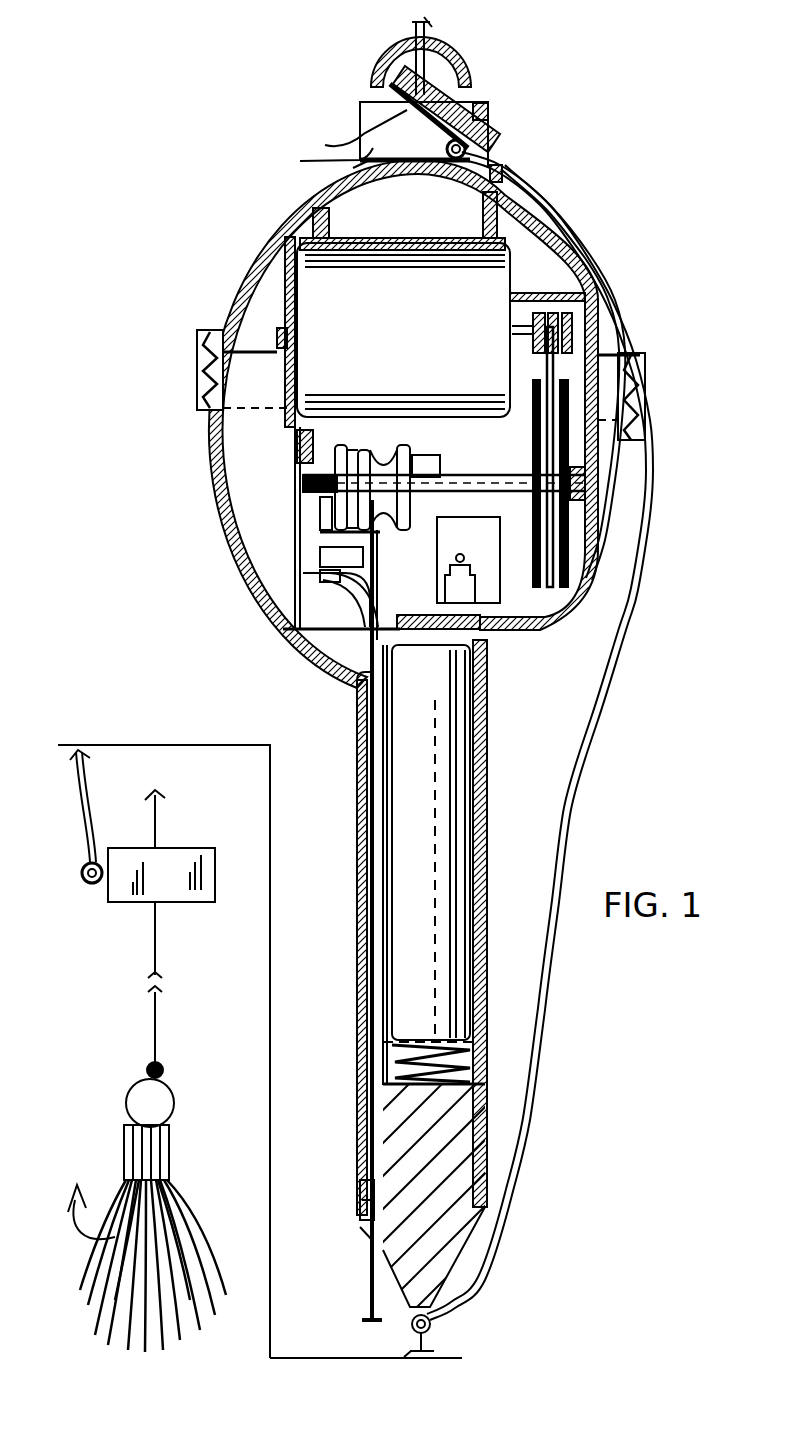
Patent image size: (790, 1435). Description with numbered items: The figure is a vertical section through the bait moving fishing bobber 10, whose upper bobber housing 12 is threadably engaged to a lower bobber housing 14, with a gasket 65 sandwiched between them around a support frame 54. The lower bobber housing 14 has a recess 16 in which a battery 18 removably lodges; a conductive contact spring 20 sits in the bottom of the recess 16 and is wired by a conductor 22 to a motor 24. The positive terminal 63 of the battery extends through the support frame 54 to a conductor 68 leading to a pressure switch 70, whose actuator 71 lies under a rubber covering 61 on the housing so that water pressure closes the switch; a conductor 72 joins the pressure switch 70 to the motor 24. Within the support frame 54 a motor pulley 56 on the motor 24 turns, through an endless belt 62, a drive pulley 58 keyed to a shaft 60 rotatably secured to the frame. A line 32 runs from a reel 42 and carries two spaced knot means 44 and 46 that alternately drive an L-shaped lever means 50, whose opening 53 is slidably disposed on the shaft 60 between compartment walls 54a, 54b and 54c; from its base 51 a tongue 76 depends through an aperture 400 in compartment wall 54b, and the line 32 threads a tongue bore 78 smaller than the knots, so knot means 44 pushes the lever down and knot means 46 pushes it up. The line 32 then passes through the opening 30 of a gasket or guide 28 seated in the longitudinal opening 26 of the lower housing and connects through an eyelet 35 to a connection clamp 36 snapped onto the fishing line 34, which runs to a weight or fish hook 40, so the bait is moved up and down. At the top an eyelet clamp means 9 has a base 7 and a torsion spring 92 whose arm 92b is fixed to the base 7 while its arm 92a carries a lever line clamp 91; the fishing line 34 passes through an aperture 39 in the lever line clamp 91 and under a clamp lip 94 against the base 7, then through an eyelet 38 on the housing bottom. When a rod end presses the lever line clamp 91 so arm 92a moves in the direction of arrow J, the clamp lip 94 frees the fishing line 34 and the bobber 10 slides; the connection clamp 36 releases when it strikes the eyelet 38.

The base 7 is at (300, 161).
The eyelet clamp means 9 is at (330, 100).
The bait moving fishing bobber 10 is at (160, 400).
The upper bobber housing 12 is at (276, 226).
The lower bobber housing 14 is at (300, 487).
The recess 16 is at (472, 1040).
The battery 18 is at (443, 866).
The contact spring 20 is at (458, 1067).
The conductor 22 is at (393, 1062).
The motor 24 is at (320, 320).
The longitudinal opening 26 is at (367, 902).
The gasket or guide 28 is at (375, 1195).
The opening 30 is at (367, 1183).
The line 32 is at (370, 668).
The fishing line 34 is at (425, 35).
The eyelet 35 is at (85, 890).
The connection clamp 36 is at (180, 905).
The eyelet 38 is at (410, 1326).
The aperture 39 is at (417, 55).
The weight/fish hook 40 is at (190, 1143).
The reel 42 is at (333, 456).
The knot means 44 is at (320, 548).
The knot means 46 is at (362, 1185).
The lever means 50 is at (408, 448).
The base 51 is at (330, 560).
The opening 53 is at (413, 462).
The support frame 54 is at (515, 275).
The compartment wall 54a is at (453, 483).
The compartment wall 54b is at (330, 600).
The compartment wall 54c is at (300, 508).
The motor pulley 56 is at (560, 320).
The drive pulley 58 is at (562, 522).
The shaft 60 is at (300, 476).
The rubber covering 61 is at (490, 660).
The endless belt 62 is at (573, 442).
The positive terminal 63 is at (360, 715).
The gasket 65 is at (223, 350).
The conductor 68 is at (425, 588).
The pressure switch 70 is at (505, 627).
The actuator 71 is at (478, 690).
The conductor 72 is at (453, 558).
The tongue 76 is at (338, 627).
The tongue bore 78 is at (345, 645).
The lever line clamp 91 is at (478, 70).
The torsion spring 92 is at (487, 125).
The arm 92a is at (325, 145).
The arm 92b is at (353, 168).
The clamp lip 94 is at (508, 160).
The aperture 400 is at (330, 612).
The arrow J is at (338, 112).